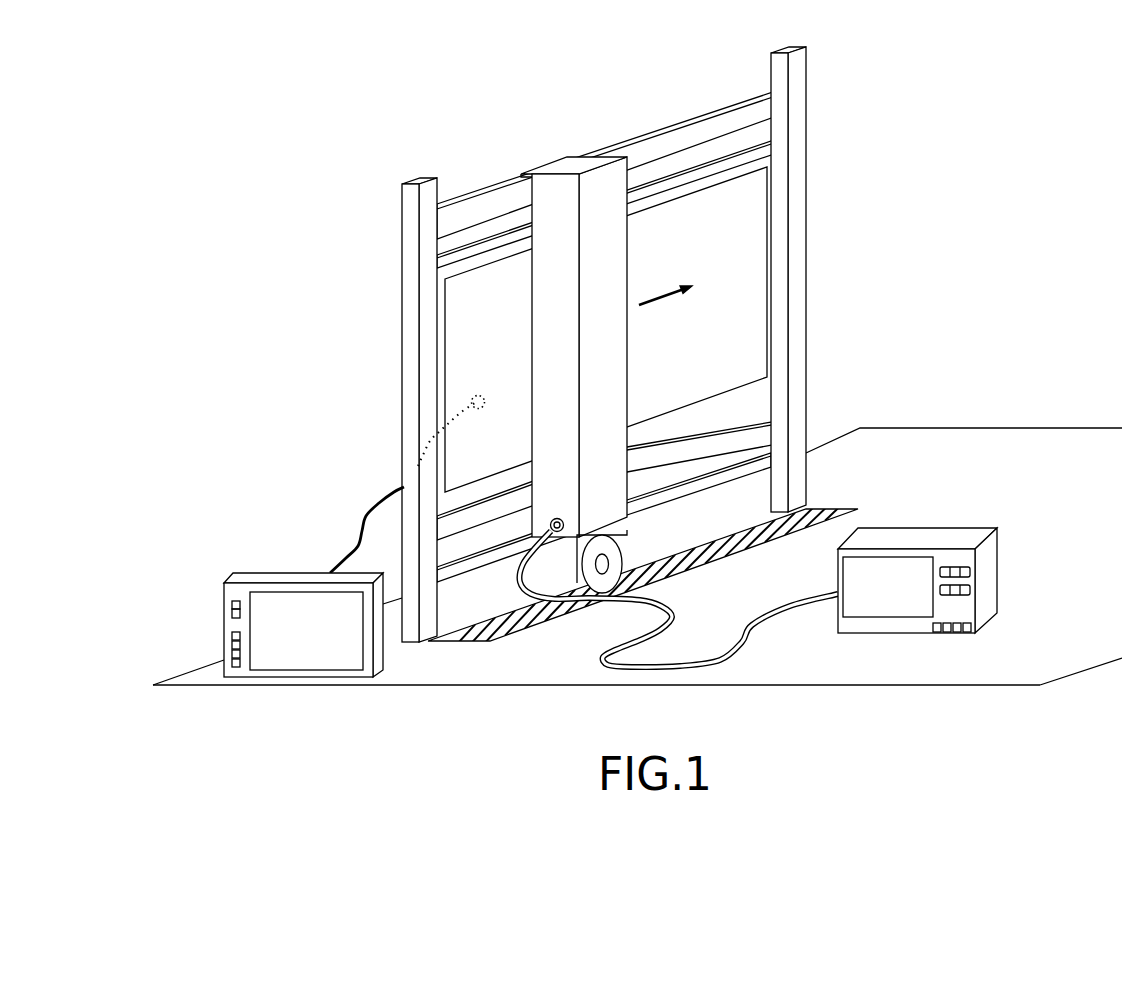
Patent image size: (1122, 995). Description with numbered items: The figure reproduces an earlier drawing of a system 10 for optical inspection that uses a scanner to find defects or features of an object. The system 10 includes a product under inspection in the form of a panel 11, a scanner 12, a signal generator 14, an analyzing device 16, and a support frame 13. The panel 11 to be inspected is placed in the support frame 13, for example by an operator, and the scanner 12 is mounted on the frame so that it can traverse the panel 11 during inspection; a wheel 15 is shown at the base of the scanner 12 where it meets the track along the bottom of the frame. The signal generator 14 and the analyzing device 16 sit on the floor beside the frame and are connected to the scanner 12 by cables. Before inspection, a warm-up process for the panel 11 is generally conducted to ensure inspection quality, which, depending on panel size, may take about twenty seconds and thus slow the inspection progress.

The system 10 is at (318, 167).
The panel 11 is at (760, 275).
The scanner 12 is at (549, 160).
The support frame 13 is at (403, 418).
The signal generator 14 is at (263, 572).
The drive wheel 15 is at (625, 540).
The analyzing device 16 is at (934, 527).